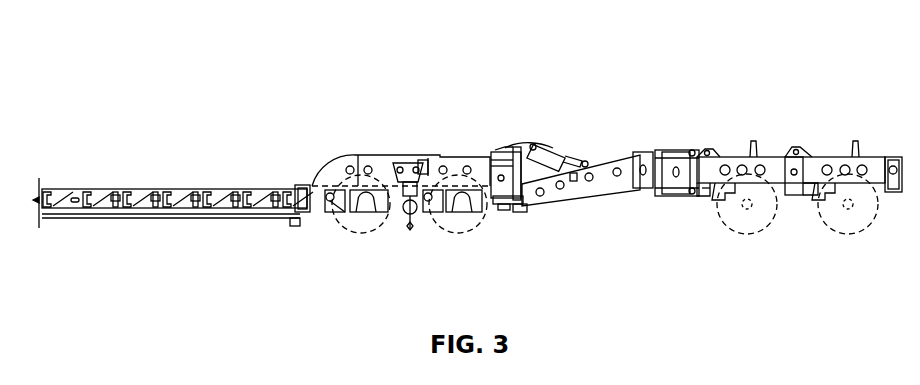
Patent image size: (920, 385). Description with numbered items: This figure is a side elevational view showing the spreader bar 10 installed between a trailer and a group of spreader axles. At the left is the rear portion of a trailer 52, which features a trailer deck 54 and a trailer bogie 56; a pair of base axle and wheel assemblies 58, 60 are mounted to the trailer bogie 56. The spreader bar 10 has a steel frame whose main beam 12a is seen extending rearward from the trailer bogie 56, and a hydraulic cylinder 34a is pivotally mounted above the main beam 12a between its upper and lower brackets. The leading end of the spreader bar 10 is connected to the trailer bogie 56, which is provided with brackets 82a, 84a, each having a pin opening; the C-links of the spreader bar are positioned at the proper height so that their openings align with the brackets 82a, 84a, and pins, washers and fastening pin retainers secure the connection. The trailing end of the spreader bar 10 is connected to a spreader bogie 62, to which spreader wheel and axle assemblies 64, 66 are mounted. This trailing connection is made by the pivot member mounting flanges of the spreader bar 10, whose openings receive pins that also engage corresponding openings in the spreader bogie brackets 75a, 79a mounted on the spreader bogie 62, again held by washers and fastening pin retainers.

The spreader bar 10 is at (150, 45).
The rear portion of a trailer 52 is at (244, 124).
The trailer deck 54 is at (160, 187).
The trailer bogie 56 is at (397, 153).
The base axle and wheel assembly 58 is at (360, 232).
The base axle and wheel assembly 60 is at (455, 232).
The bracket 82a is at (500, 152).
The bracket 84a is at (510, 210).
The hydraulic cylinder 34a is at (553, 147).
The main beam 12a is at (588, 200).
The spreader bogie bracket 79a is at (690, 200).
The spreader bogie bracket 75a is at (700, 150).
The spreader bogie 62 is at (770, 157).
The spreader wheel and axle assembly 64 is at (747, 214).
The spreader wheel and axle assembly 66 is at (846, 214).